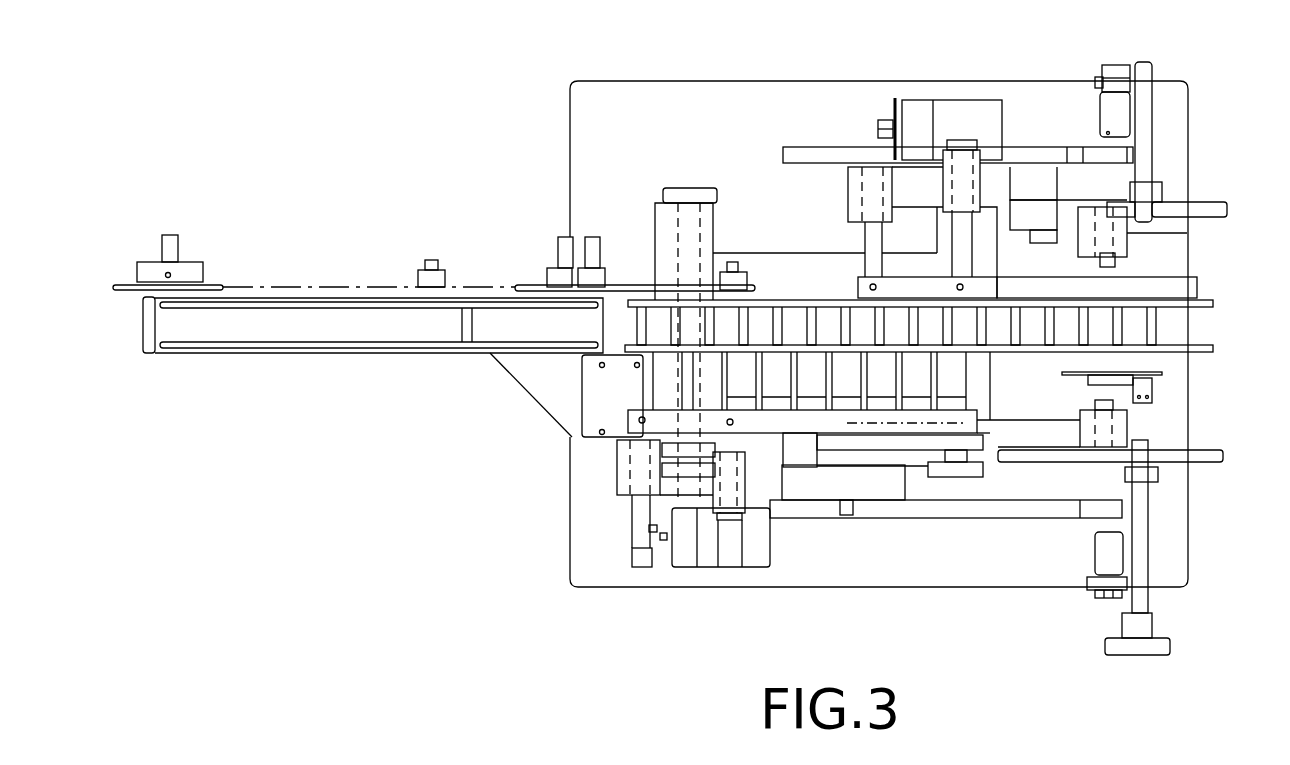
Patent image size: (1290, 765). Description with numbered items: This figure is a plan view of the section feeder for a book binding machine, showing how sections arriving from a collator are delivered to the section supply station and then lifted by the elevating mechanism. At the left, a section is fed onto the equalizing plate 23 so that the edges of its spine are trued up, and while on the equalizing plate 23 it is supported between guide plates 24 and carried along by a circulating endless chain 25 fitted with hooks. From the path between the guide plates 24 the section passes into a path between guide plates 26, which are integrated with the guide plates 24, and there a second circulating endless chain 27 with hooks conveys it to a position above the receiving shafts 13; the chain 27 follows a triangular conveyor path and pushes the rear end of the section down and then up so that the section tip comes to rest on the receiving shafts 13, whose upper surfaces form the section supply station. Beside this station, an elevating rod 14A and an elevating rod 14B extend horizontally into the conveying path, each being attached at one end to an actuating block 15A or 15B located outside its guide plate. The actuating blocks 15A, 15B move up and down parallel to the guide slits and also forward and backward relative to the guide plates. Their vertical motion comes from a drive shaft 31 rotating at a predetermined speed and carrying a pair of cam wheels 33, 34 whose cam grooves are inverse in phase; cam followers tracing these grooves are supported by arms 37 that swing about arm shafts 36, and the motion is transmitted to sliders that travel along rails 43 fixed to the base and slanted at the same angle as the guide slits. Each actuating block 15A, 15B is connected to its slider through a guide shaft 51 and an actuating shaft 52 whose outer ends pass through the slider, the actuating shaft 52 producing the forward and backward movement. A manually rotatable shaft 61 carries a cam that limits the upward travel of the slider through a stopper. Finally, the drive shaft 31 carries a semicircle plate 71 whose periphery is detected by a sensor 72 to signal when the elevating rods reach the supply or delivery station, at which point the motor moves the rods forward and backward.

The receiving shafts 13 is at (663, 310).
The elevating rod 14A is at (853, 390).
The elevating rod 14B is at (1022, 317).
The actuating block 15A is at (910, 432).
The actuating block 15B is at (1045, 287).
The equalizing plate 23 is at (295, 332).
The guide plates 24 is at (247, 302).
The circulating endless chain 25 is at (313, 287).
The guide plates 26 is at (533, 297).
The circulating endless chain 27 is at (507, 282).
The drive shaft 31 is at (1122, 65).
The cam wheel 33 is at (1224, 458).
The cam wheel 34 is at (1207, 208).
The arm shafts 36 is at (1115, 268).
The arms 37 is at (1128, 248).
The rails 43 is at (980, 514).
The guide shaft 51 is at (962, 142).
The actuating shaft 52 is at (863, 257).
The shaft 61 is at (1148, 603).
The semicircle plate 71 is at (1140, 367).
The sensor 72 is at (1153, 395).